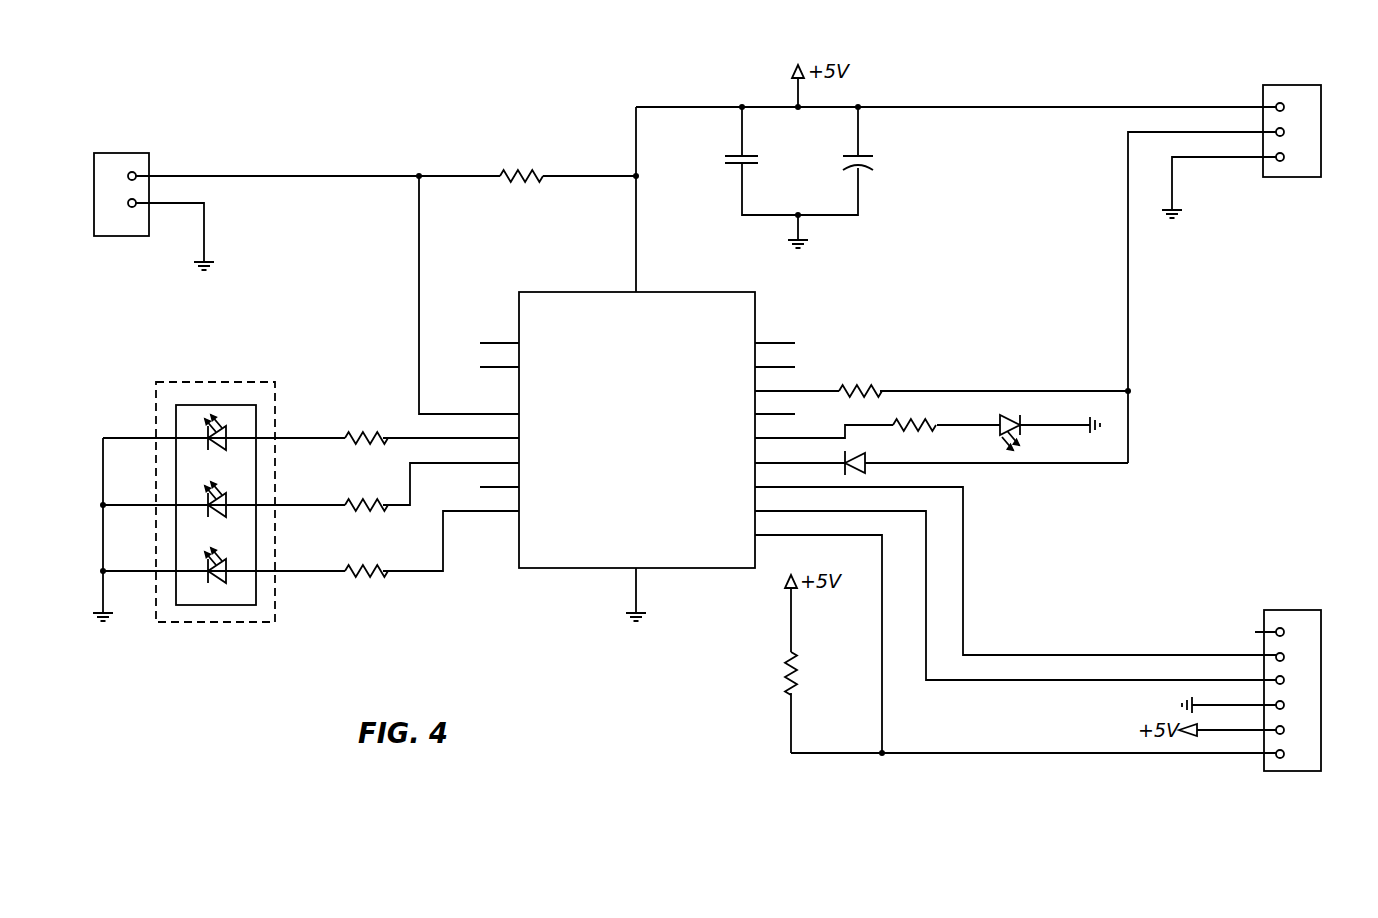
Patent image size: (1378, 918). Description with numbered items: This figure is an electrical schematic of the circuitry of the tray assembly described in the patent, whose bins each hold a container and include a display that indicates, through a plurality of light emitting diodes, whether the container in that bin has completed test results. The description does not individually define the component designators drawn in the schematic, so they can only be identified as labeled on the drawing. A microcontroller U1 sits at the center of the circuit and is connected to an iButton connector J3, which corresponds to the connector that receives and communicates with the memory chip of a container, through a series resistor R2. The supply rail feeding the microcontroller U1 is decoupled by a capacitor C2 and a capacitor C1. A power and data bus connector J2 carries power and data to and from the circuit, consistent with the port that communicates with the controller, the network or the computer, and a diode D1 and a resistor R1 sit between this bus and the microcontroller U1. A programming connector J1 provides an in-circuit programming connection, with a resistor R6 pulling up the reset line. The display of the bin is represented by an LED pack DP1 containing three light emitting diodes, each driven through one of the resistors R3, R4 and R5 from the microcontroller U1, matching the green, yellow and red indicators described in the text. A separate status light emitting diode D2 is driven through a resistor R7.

The iButton connector J3 is at (241, 183).
The resistor 1.5K R2 is at (524, 175).
The capacitor 0.1uF C2 is at (762, 158).
The capacitor 47uF C1 is at (876, 159).
The power/data bus connector J2 is at (1292, 145).
The microcontroller 16F88 U1 is at (637, 432).
The LED pack DP1 is at (215, 514).
The resistor 680 R3 is at (366, 439).
The resistor 680 R4 is at (366, 505).
The resistor 680 R5 is at (366, 572).
The resistor 4.7K R1 is at (861, 389).
The resistor 1K R7 is at (914, 425).
The status LED D2 is at (1016, 422).
The diode 1N914 D1 is at (874, 461).
The resistor 10K R6 is at (815, 672).
The ICSP connector J1 is at (1292, 691).